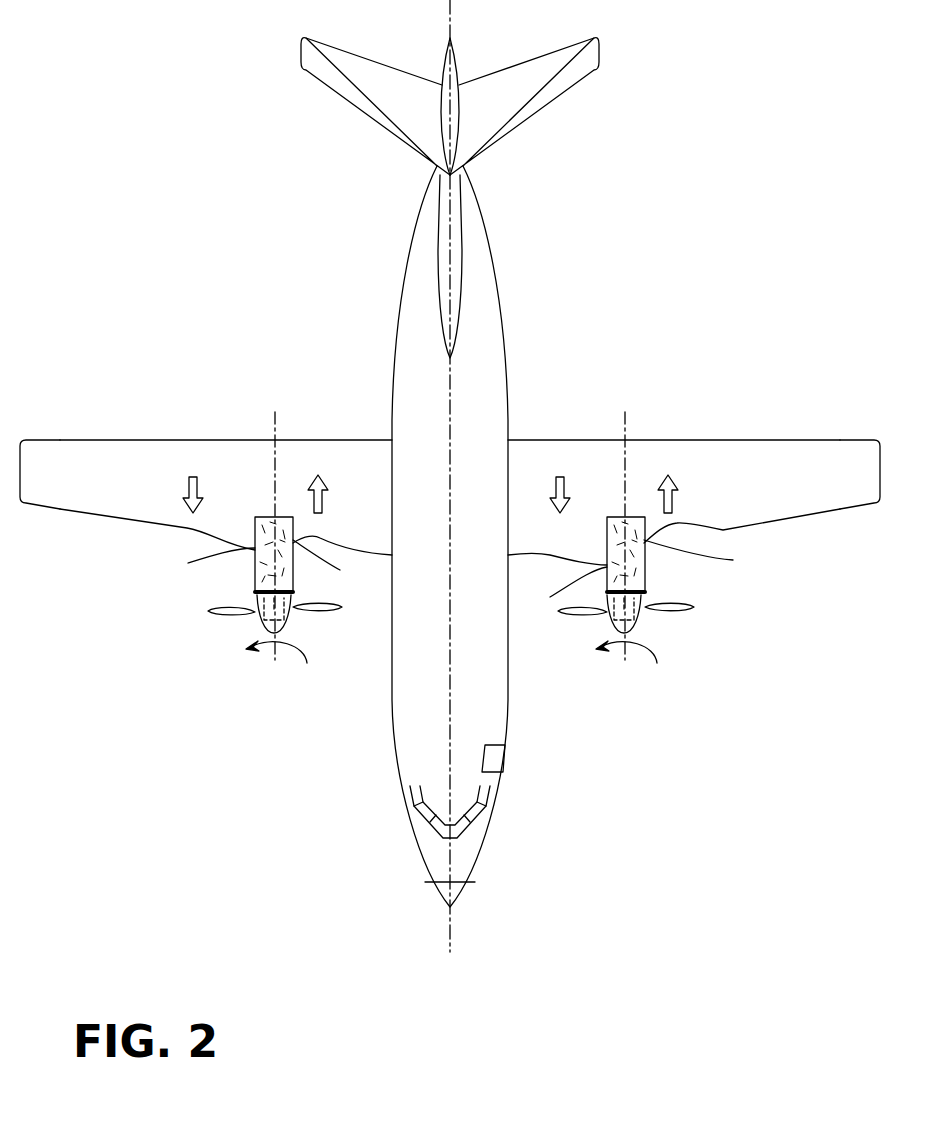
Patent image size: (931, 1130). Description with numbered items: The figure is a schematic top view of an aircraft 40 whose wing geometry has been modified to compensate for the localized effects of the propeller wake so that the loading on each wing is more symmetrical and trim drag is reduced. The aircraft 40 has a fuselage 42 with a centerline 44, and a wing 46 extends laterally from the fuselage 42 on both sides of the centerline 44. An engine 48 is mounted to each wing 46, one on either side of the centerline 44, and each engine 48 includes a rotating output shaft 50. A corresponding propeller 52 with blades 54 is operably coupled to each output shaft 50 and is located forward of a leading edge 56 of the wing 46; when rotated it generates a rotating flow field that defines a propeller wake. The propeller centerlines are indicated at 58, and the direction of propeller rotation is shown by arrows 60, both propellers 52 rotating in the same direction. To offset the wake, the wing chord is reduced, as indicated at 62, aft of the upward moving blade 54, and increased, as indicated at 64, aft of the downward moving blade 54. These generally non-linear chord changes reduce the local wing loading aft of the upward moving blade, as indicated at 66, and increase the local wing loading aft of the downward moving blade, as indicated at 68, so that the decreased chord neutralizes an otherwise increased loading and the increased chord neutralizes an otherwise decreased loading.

The aircraft 40 is at (491, 261).
The fuselage 42 is at (504, 375).
The centerline 44 is at (448, 402).
The wing 46 is at (100, 458).
The engine 48 is at (257, 572).
The rotating output shaft 50 is at (298, 610).
The propeller 52 is at (265, 622).
The blades 54 is at (333, 610).
The leading edge 56 is at (90, 515).
The propeller centerline 58 is at (272, 427).
The arrows indicating direction of propeller rotation 60 is at (307, 663).
The reduction in wing chord 62 is at (530, 564).
The increase in wing chord 64 is at (378, 583).
The reduced local wing loading 66 is at (330, 475).
The increased local wing loading 68 is at (185, 493).